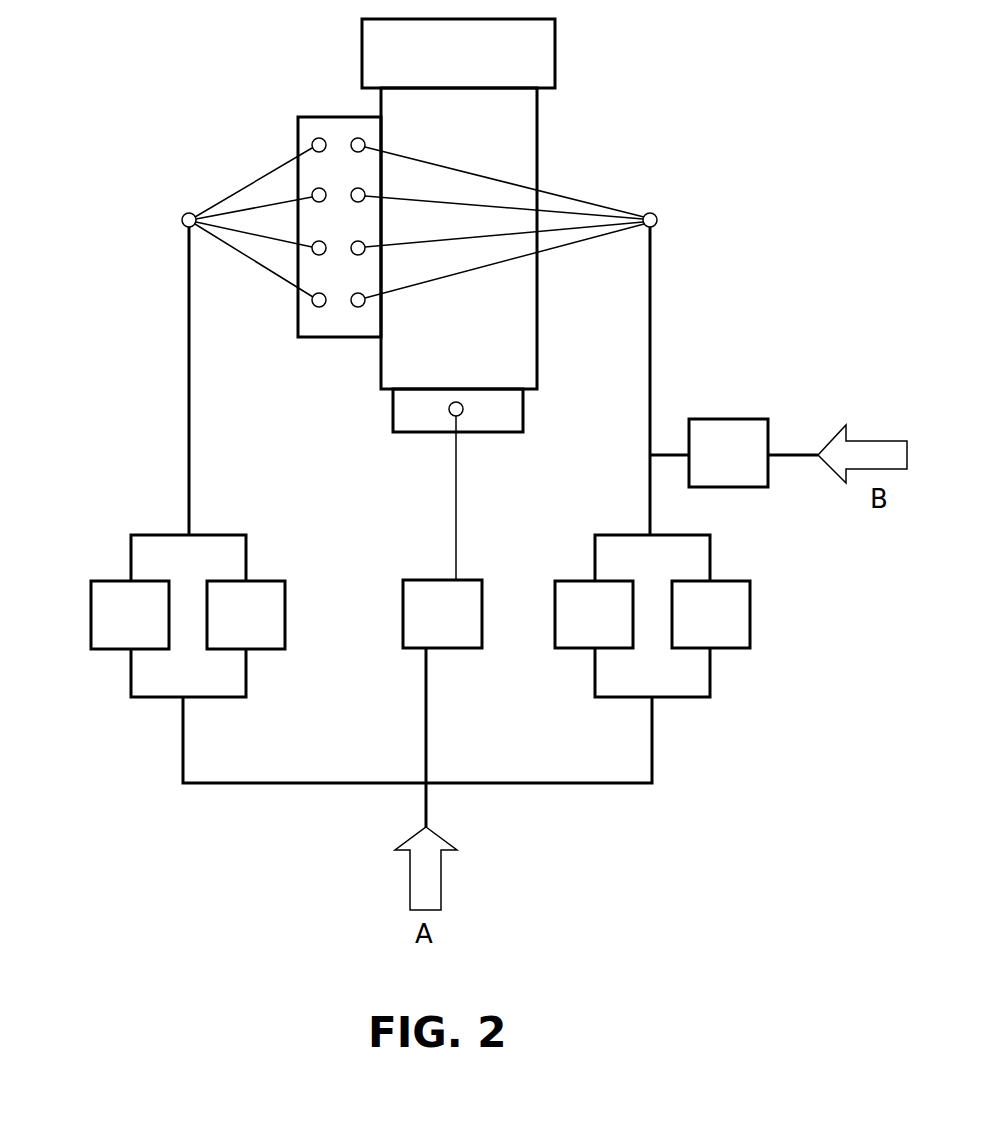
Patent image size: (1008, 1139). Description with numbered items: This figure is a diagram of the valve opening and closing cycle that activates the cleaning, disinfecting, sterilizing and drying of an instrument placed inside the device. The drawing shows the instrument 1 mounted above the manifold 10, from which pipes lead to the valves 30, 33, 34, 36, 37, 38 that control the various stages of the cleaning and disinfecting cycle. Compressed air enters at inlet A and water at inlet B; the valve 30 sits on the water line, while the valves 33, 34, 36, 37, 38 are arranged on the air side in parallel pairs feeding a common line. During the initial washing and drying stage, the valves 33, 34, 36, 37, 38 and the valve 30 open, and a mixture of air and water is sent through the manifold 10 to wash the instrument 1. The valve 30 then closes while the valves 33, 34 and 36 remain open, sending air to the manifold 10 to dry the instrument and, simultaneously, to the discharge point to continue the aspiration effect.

The motor 1 is at (515, 140).
The manifold 10 is at (317, 128).
The valve 30 is at (724, 440).
The electro valve 33 is at (578, 598).
The electro valve 34 is at (710, 617).
The valve 36 is at (457, 635).
The valve 37 is at (125, 615).
The valve 38 is at (258, 603).